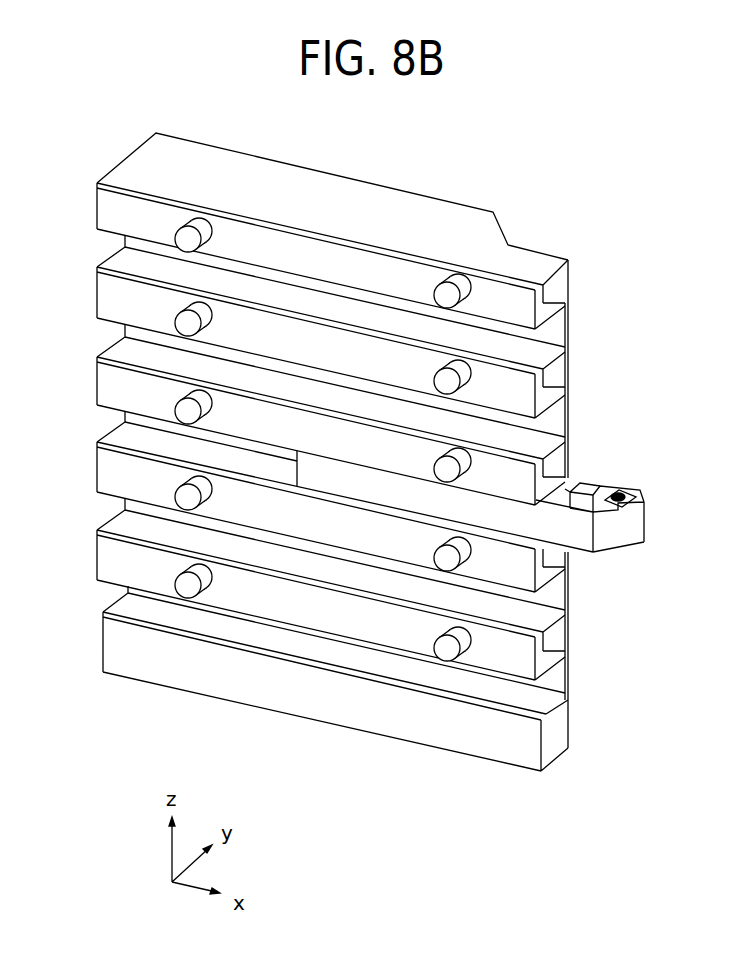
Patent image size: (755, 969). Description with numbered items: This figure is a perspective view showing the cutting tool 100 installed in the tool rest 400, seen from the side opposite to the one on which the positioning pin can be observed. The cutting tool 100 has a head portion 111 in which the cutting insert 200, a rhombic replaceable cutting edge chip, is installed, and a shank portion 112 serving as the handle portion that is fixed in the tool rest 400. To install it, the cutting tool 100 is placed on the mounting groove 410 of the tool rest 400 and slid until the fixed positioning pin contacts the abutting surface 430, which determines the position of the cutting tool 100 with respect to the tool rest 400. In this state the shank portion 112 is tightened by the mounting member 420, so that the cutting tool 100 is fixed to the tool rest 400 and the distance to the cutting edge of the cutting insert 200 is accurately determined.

The cutting tool 100 is at (634, 519).
The head portion 111 is at (663, 478).
The shank portion 112 is at (368, 482).
The cutting insert 200 is at (633, 497).
The tool rest 400 is at (332, 442).
The mounting groove 410 is at (310, 498).
The mounting member 420 is at (105, 385).
The abutting surface 430 is at (573, 283).